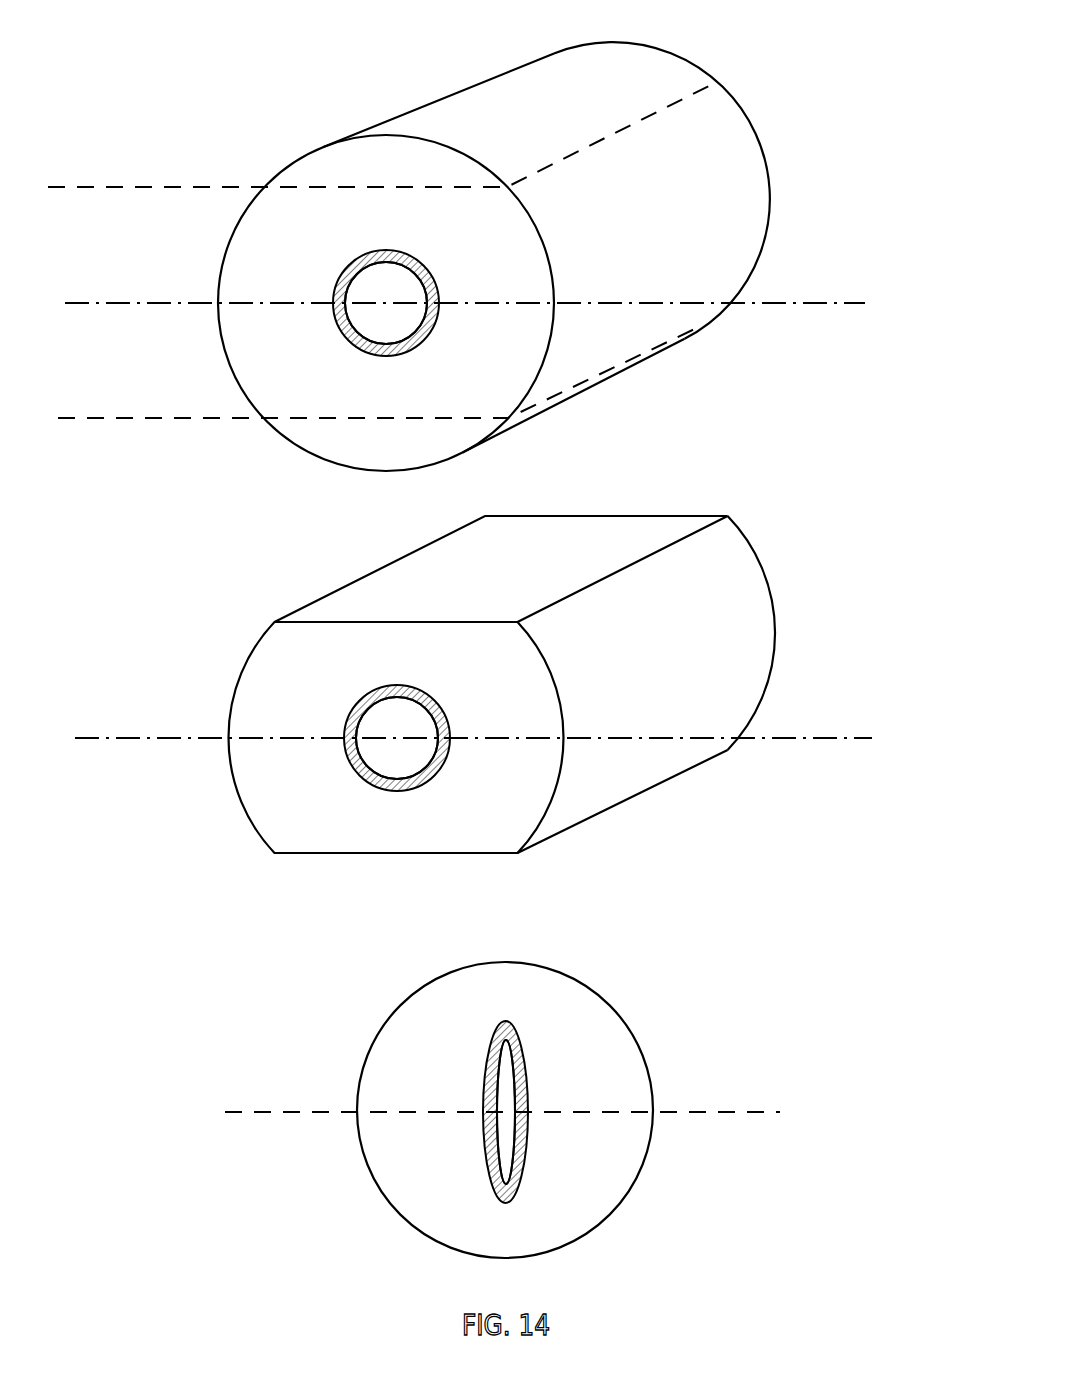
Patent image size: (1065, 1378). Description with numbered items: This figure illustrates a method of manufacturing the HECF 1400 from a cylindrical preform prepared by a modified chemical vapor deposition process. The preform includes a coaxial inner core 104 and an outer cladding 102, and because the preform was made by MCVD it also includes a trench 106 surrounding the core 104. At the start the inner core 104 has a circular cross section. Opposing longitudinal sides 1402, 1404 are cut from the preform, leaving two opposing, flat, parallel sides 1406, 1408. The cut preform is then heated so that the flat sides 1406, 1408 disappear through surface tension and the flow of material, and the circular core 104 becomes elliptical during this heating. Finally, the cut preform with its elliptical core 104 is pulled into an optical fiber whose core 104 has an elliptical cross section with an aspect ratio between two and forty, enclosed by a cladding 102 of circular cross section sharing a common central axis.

The HECF 1400 is at (76, 37).
The outer cladding 102 is at (496, 650).
The inner core 104 is at (510, 1112).
The trench 106 is at (345, 265).
The longitudinal side 1402 is at (132, 187).
The longitudinal side 1404 is at (133, 425).
The flat parallel side 1406 is at (290, 1112).
The flat parallel side 1408 is at (303, 863).